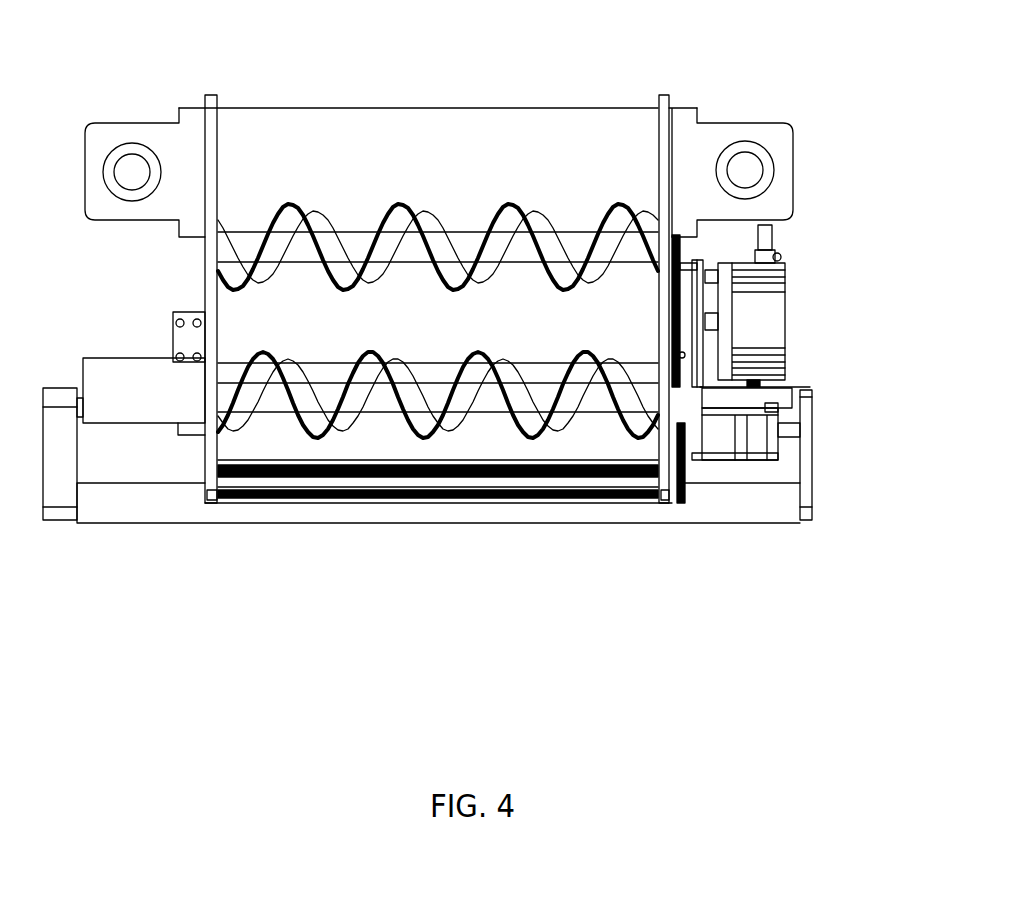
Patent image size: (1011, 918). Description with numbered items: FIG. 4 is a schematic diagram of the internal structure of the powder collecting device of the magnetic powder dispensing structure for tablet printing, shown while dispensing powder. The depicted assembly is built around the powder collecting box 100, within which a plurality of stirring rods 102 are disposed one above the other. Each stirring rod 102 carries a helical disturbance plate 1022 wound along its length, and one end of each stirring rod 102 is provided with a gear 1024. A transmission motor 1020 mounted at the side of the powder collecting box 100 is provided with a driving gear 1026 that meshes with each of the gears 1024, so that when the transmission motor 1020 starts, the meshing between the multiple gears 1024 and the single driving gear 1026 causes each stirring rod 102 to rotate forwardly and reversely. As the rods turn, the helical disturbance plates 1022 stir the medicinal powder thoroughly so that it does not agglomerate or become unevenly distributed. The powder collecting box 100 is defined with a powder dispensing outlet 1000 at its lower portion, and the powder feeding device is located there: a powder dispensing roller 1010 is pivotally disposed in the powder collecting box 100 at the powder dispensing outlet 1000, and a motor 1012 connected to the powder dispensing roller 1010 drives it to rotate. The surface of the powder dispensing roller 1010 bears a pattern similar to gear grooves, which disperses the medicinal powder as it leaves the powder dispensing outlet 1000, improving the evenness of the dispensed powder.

The powder collecting box 100 is at (617, 123).
The stirring rods 102 is at (462, 238).
The helical disturbance plate 1022 is at (295, 210).
The gear 1024 is at (680, 247).
The transmission motor 1020 is at (768, 325).
The driving gear 1026 is at (680, 345).
The motor 1012 is at (728, 443).
The powder dispensing outlet 1000 is at (230, 498).
The powder dispensing roller 1010 is at (630, 498).